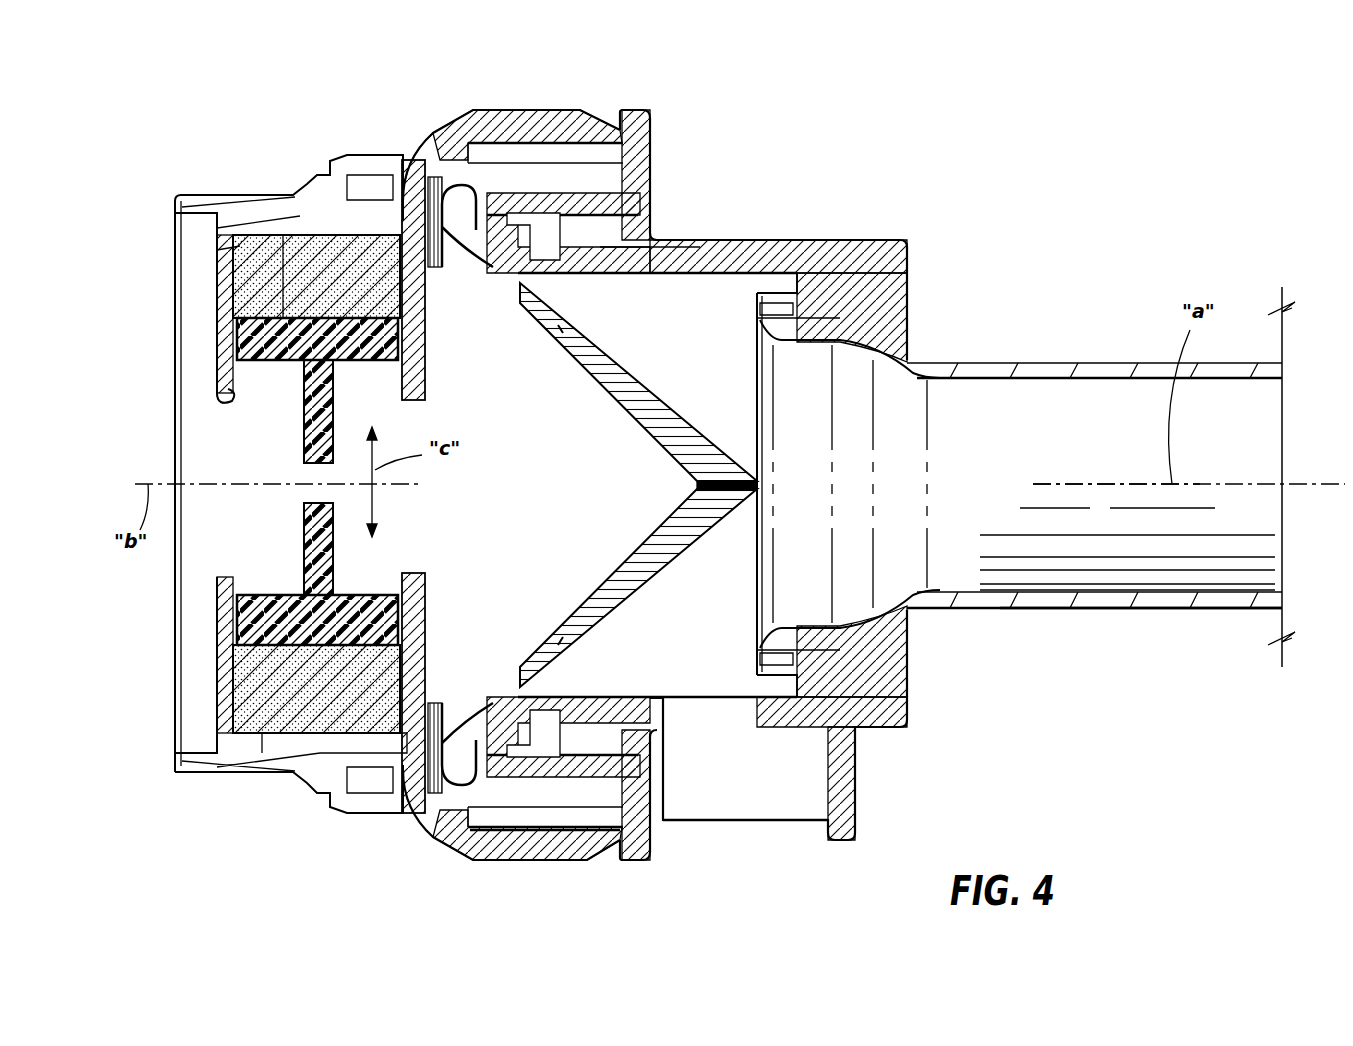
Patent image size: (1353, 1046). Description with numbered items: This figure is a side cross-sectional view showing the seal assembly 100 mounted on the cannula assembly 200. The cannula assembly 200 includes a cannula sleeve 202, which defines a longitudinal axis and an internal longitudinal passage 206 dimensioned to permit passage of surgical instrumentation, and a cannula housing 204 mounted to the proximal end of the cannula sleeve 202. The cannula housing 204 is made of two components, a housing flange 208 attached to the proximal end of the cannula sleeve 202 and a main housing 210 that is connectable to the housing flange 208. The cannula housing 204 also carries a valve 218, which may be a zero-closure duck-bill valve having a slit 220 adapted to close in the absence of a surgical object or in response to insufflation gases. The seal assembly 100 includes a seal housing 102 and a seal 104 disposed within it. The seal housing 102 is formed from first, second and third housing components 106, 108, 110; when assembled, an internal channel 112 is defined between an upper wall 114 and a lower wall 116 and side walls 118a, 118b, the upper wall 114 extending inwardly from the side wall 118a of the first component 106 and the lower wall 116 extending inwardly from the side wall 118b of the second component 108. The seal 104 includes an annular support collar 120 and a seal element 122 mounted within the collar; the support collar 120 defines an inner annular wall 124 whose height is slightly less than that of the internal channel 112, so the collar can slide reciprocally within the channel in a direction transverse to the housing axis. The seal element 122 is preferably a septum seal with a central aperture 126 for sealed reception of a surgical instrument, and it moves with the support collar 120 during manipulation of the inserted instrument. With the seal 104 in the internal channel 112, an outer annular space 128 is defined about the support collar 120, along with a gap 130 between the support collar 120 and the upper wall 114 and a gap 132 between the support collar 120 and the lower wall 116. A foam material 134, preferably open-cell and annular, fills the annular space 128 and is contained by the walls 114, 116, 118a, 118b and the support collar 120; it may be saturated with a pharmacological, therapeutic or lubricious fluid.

The seal assembly 100 is at (391, 124).
The seal housing 102 is at (600, 830).
The seal 104 is at (298, 195).
The first housing component 106 is at (330, 172).
The second housing component 108 is at (590, 840).
The third housing component 110 is at (612, 192).
The internal channel 112 is at (560, 760).
The upper wall 114 is at (225, 400).
The lower wall 116 is at (535, 200).
The side wall 118a is at (268, 235).
The side wall 118b is at (437, 170).
The support collar 120 is at (240, 640).
The seal element 122 is at (303, 418).
The inner annular wall 124 is at (283, 235).
The central aperture 126 is at (262, 705).
The outer annular space 128 is at (463, 215).
The gap 130 is at (240, 325).
The gap 132 is at (400, 300).
The foam material 134 is at (240, 712).
The cannula assembly 200 is at (993, 350).
The cannula sleeve 202 is at (1093, 610).
The cannula housing 204 is at (769, 238).
The internal longitudinal passage 206 is at (1102, 475).
The housing flange 208 is at (846, 335).
The main housing 210 is at (855, 776).
The valve 218 is at (648, 320).
The slit 220 is at (727, 500).